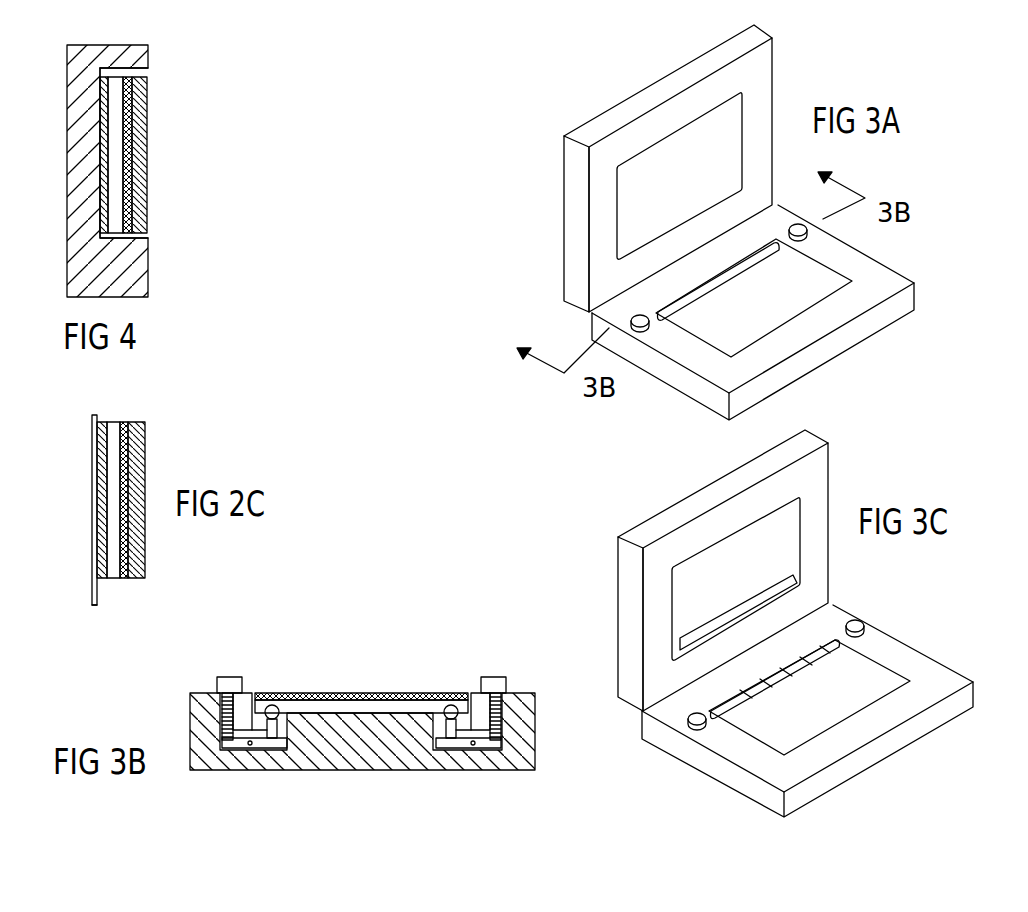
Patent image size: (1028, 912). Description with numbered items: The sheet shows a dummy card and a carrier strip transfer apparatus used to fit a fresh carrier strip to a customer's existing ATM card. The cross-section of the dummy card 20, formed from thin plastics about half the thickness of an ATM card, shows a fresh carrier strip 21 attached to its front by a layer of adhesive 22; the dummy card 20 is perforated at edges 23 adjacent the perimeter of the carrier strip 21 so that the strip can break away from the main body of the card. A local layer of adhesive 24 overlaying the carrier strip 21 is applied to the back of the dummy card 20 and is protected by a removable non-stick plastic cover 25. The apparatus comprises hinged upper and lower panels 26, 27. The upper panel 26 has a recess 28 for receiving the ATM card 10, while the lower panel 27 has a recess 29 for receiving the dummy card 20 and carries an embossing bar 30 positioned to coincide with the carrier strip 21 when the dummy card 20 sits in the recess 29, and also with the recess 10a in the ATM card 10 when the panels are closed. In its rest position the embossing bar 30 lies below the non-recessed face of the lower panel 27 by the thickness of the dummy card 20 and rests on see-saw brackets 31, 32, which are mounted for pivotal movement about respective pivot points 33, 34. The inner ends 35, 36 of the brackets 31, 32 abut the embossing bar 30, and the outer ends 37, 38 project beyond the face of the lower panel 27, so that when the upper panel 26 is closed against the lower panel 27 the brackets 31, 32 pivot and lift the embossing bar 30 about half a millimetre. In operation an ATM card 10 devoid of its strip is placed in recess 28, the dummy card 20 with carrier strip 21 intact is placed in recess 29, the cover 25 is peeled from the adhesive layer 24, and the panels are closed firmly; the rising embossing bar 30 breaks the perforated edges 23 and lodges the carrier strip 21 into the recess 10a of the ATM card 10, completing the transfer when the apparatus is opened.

In FIG. 4, the ATM card 10 is at (133, 55).
In FIG. 3C, the ATM card 10 is at (787, 510).
In FIG. 4, the recess 10a is at (143, 73).
In FIG. 3C, the recess 10a is at (700, 630).
In FIG. 4, the dummy card 20 is at (115, 155).
In FIG. 2C, the dummy card 20 is at (113, 443).
In FIG. 3C, the dummy card 20 is at (871, 691).
In FIG. 4, the carrier strip 21 is at (147, 108).
In FIG. 2C, the carrier strip 21 is at (145, 550).
In FIG. 3C, the carrier strip 21 is at (762, 690).
In FIG. 4, the layer of adhesive 22 is at (133, 203).
In FIG. 2C, the layer of adhesive 22 is at (127, 580).
In FIG. 2C, the perforated edges 23 is at (108, 422).
In FIG. 2C, the local layer of adhesive 24 is at (102, 580).
In FIG. 4, the removable non-stick plastic cover 25 is at (98, 200).
In FIG. 2C, the removable non-stick plastic cover 25 is at (96, 578).
In FIG. 3A, the upper panel 26 is at (600, 237).
In FIG. 3C, the upper panel 26 is at (652, 603).
In FIG. 3B, the lower panel 27 is at (202, 720).
In FIG. 3A, the lower panel 27 is at (711, 395).
In FIG. 3C, the lower panel 27 is at (754, 786).
In FIG. 3A, the recess 28 is at (632, 192).
In FIG. 3A, the recess 29 is at (794, 299).
In FIG. 3B, the embossing bar 30 is at (357, 707).
In FIG. 3A, the embossing bar 30 is at (783, 255).
In FIG. 3B, the see-saw bracket 31 is at (285, 742).
In FIG. 3B, the see-saw bracket 32 is at (433, 737).
In FIG. 3B, the pivot point 33 is at (263, 740).
In FIG. 3B, the pivot point 34 is at (442, 740).
In FIG. 3B, the inner end 35 is at (273, 708).
In FIG. 3B, the inner end 36 is at (445, 702).
In FIG. 3B, the outer end 37 is at (230, 677).
In FIG. 3A, the outer end 37 is at (628, 325).
In FIG. 3C, the outer end 37 is at (693, 722).
In FIG. 3B, the outer end 38 is at (483, 650).
In FIG. 3A, the outer end 38 is at (807, 236).
In FIG. 3C, the outer end 38 is at (858, 622).